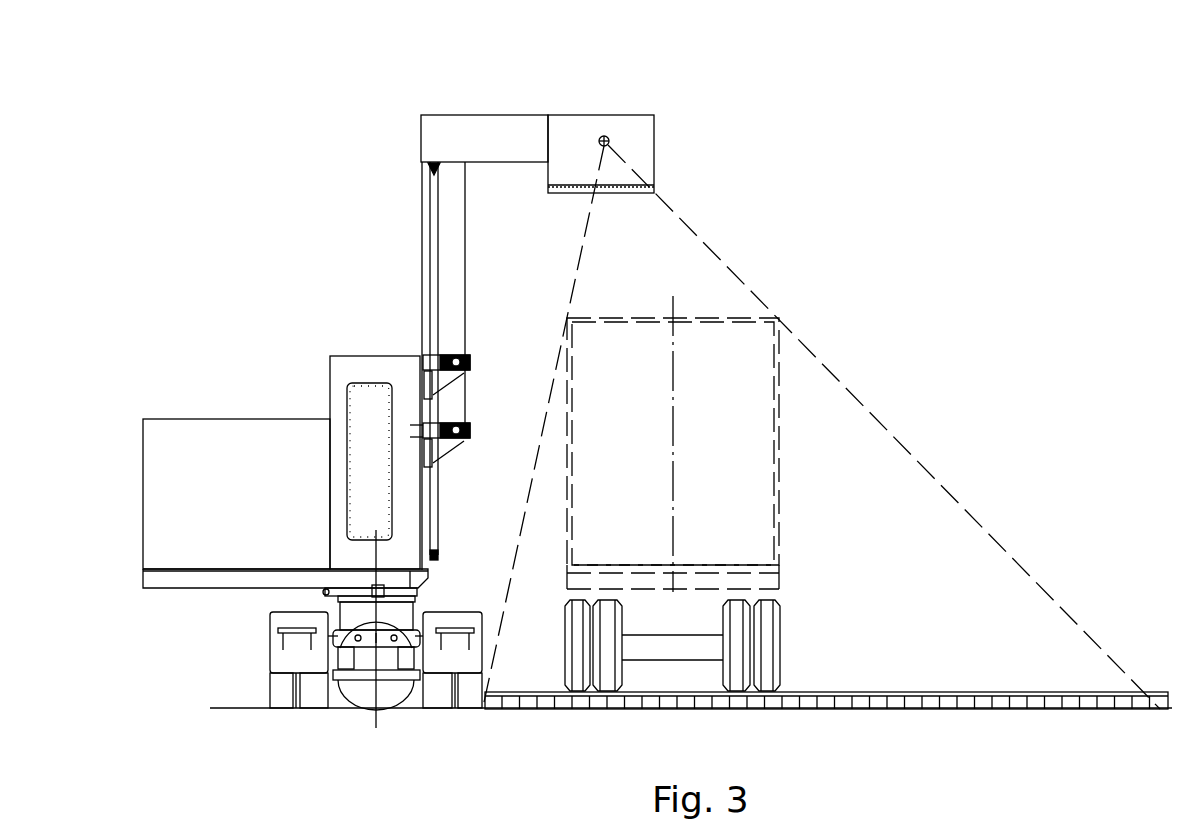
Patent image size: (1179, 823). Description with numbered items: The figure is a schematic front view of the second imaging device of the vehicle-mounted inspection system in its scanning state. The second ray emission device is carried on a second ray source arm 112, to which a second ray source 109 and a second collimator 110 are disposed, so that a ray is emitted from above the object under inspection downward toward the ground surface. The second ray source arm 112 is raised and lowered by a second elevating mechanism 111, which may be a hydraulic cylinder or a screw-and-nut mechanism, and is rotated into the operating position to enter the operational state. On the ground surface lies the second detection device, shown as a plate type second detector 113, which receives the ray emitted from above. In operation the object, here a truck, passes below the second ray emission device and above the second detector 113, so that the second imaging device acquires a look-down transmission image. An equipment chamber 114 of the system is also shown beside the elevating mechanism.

The second ray source 109 is at (794, 96).
The second collimator 110 is at (766, 152).
The second elevating mechanism 111 is at (319, 366).
The second ray source arm 112 is at (354, 109).
The second detector 113 is at (826, 633).
The equipment chamber 114 is at (236, 451).